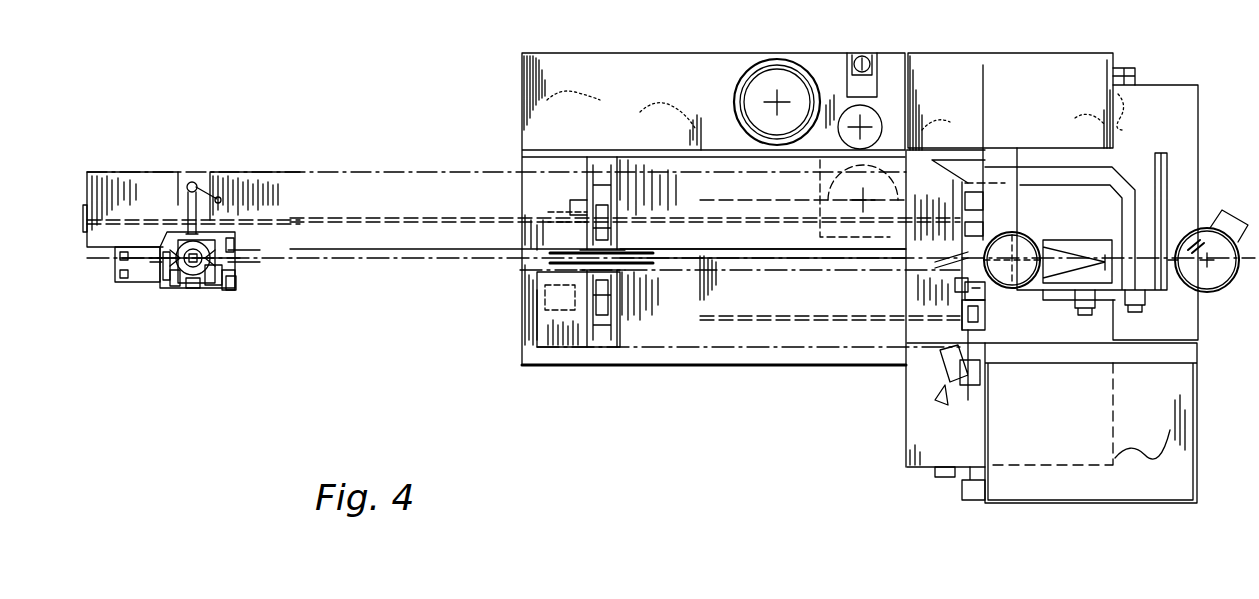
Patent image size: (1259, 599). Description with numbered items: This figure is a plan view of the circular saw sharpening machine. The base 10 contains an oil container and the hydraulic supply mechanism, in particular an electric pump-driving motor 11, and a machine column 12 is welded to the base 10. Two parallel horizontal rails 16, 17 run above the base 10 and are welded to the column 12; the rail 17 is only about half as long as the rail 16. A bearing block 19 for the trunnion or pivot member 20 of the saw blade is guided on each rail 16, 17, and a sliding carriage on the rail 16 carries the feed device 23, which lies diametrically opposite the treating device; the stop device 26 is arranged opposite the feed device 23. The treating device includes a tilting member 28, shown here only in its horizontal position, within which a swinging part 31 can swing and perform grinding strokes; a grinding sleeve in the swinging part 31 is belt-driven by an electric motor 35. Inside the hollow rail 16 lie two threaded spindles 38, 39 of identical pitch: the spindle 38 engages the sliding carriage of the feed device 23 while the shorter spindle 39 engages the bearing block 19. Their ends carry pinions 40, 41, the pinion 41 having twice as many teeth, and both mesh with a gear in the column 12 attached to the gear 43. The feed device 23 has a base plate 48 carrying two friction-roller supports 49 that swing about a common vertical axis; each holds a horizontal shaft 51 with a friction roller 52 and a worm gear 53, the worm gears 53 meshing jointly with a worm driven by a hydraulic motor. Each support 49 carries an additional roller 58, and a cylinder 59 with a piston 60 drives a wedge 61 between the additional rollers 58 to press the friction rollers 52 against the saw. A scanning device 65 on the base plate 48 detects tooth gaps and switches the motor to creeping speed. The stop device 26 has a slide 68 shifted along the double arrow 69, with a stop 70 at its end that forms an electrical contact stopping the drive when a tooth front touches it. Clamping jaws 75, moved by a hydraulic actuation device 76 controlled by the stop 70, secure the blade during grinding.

The base 10 is at (522, 300).
The electric pump-driving motor 11 is at (738, 94).
The machine column 12 is at (1072, 50).
The horizontal rail 16 is at (600, 190).
The horizontal rail 17 is at (608, 335).
The bearing block 19 is at (611, 224).
The trunnion or pivot member 20 is at (606, 215).
The feed device 23 is at (183, 362).
The stop device 26 is at (968, 355).
The tilting member 28 is at (1092, 170).
The swinging part 31 is at (1076, 234).
The electric motor 35 is at (1218, 280).
The threaded spindle 38 is at (360, 224).
The threaded spindle 39 is at (707, 195).
The pinion 40 is at (986, 216).
The pinion 41 is at (960, 176).
The gear 43 is at (987, 201).
The base plate 48 is at (183, 172).
The friction-roller support 49 is at (234, 290).
The horizontal shaft 51 is at (220, 290).
The friction roller 52 is at (236, 246).
The worm gear 53 is at (200, 290).
The additional roller 58 is at (172, 288).
The cylinder 59 is at (120, 276).
The piston 60 is at (142, 274).
The wedge 61 is at (160, 280).
The scanning device 65 is at (242, 264).
The slide 68 is at (985, 308).
The double arrow 69 is at (945, 405).
The stop 70 is at (982, 290).
The clamping jaws 75 is at (958, 262).
The hydraulic actuation device 76 is at (948, 286).